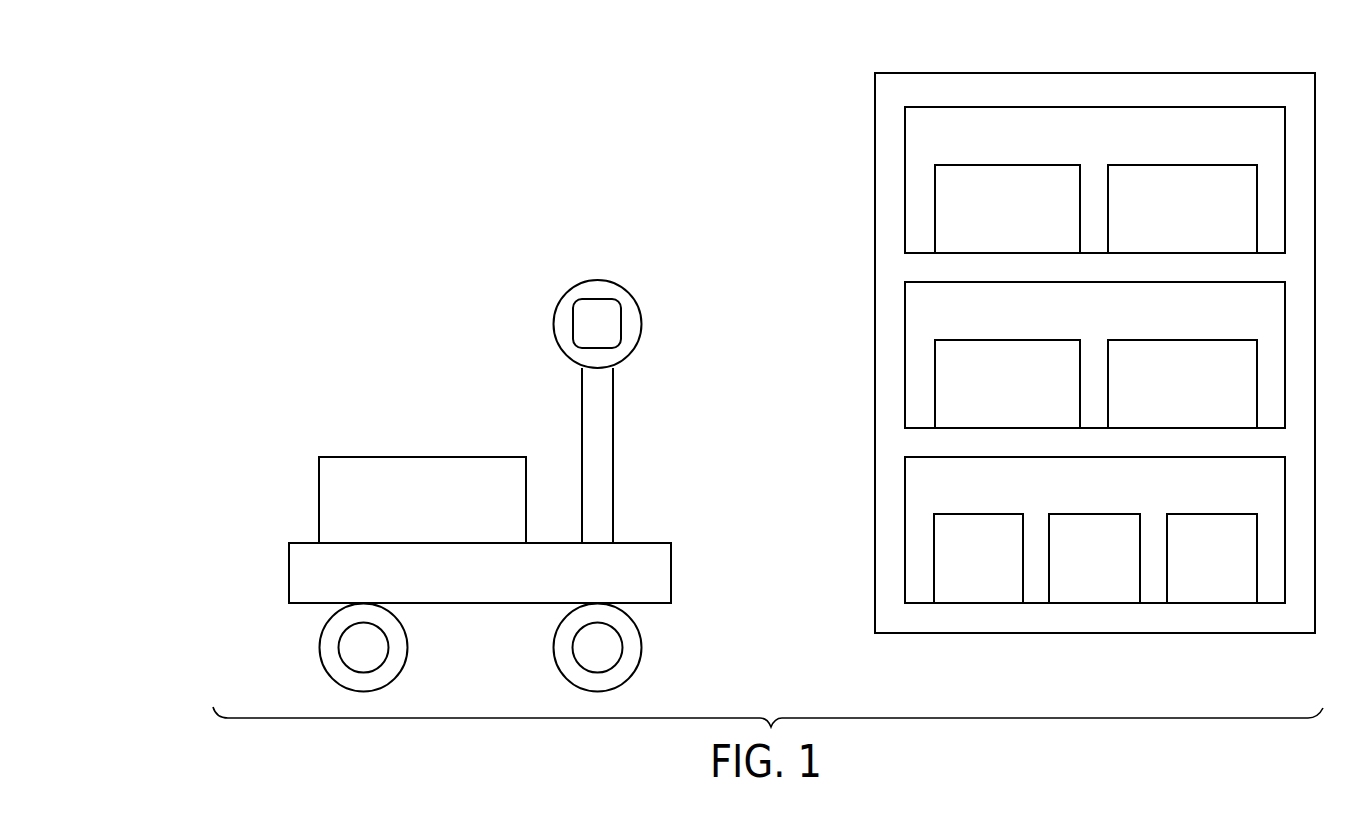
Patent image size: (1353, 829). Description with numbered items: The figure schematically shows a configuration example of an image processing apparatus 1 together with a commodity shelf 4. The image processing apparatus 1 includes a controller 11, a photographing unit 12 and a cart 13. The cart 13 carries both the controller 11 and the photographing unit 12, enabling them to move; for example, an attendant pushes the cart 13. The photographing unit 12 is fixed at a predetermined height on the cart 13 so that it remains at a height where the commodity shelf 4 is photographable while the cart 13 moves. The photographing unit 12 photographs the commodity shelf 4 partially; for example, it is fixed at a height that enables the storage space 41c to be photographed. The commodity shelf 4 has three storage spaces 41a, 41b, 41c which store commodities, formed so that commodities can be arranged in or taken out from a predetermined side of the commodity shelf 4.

The image processing apparatus 1 is at (436, 193).
The controller 11 is at (332, 456).
The photographing unit 12 is at (593, 280).
The cart 13 is at (289, 573).
The commodity shelf 4 is at (1300, 73).
The storage space 41a is at (905, 183).
The storage space 41b is at (905, 358).
The storage space 41c is at (905, 533).